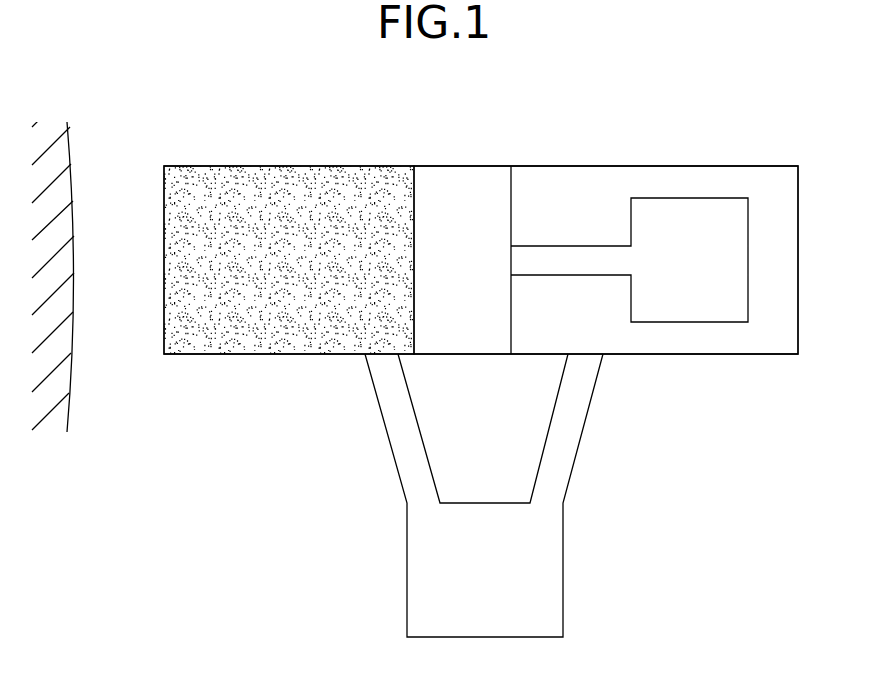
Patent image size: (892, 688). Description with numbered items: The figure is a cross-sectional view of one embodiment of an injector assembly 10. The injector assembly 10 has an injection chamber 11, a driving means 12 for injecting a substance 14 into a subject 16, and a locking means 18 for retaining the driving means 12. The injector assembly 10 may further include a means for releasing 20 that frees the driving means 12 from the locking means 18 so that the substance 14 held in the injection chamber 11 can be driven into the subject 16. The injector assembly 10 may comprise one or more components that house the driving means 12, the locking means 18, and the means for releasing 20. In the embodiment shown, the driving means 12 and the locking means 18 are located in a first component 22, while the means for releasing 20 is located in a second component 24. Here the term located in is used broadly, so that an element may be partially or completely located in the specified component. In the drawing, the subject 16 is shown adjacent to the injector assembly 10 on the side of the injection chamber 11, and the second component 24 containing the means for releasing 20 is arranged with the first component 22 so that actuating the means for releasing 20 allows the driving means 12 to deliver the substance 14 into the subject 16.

The injector assembly 10 is at (688, 132).
The injection chamber 11 is at (362, 193).
The driving means 12 is at (466, 193).
The substance 14 is at (262, 232).
The subject 16 is at (70, 388).
The locking means 18 is at (685, 297).
The means for releasing 20 is at (523, 571).
The first component 22 is at (203, 138).
The second component 24 is at (375, 600).